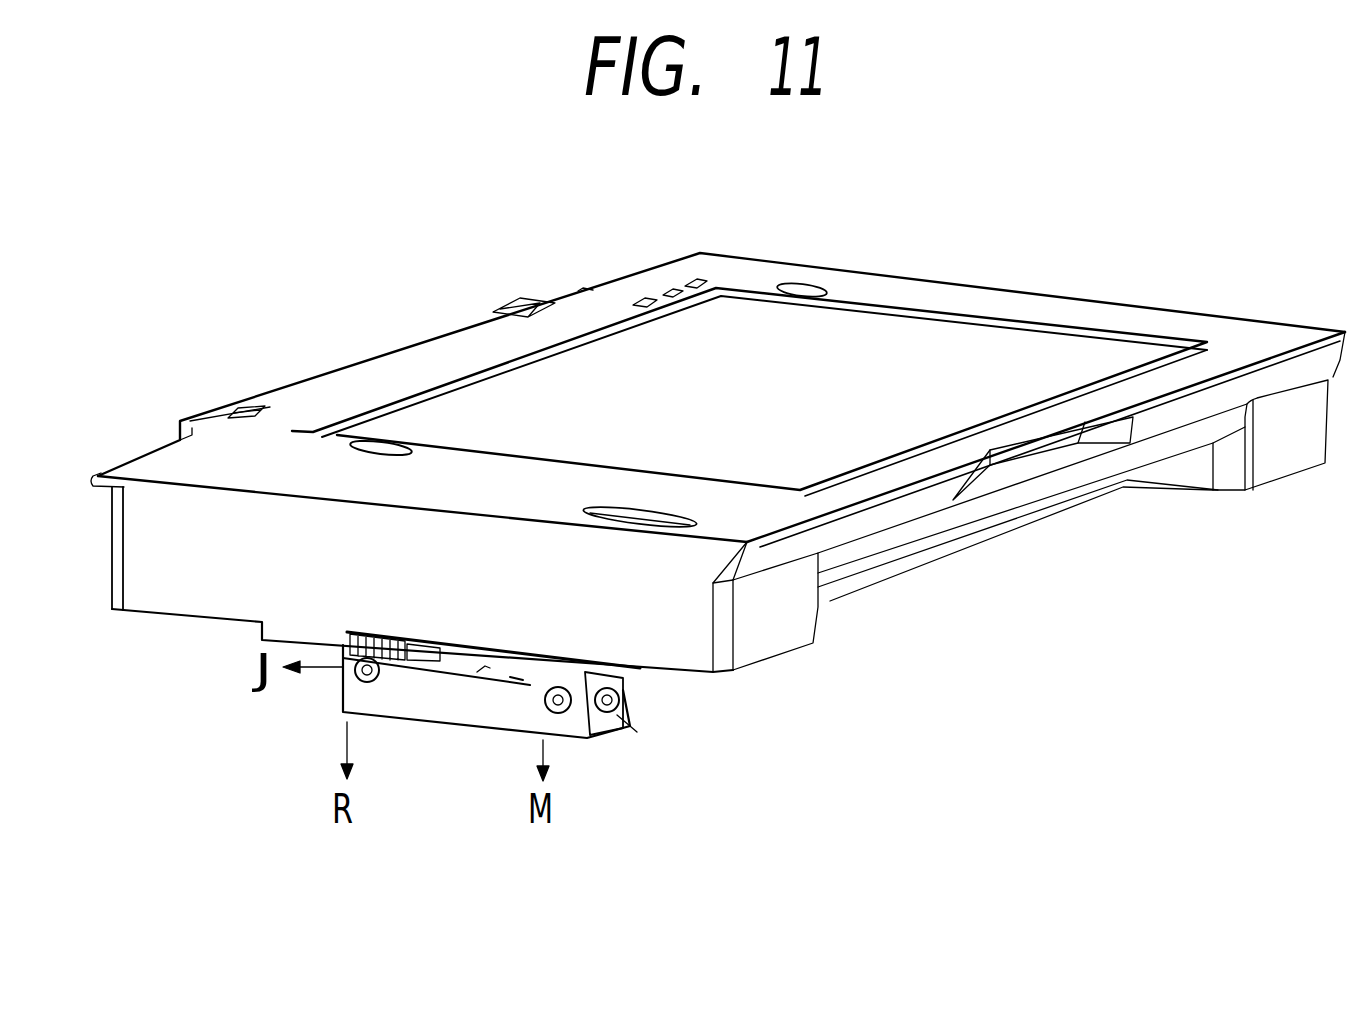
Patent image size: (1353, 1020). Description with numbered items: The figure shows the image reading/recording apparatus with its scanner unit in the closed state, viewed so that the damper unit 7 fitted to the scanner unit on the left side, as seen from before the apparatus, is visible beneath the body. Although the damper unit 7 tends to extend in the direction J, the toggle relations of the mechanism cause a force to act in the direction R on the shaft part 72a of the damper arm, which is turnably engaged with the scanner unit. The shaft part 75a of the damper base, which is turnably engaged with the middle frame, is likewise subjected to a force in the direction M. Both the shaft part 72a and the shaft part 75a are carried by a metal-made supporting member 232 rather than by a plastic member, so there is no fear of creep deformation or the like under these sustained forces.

The shaft part of the damper arm 72a is at (340, 697).
The shaft part of the damper base 75a is at (610, 740).
The damper unit 7 is at (487, 668).
The supporting member 232 is at (412, 714).